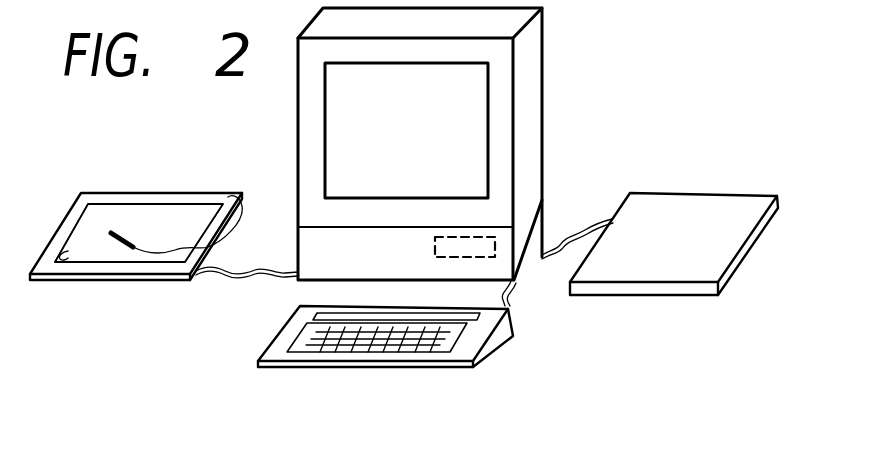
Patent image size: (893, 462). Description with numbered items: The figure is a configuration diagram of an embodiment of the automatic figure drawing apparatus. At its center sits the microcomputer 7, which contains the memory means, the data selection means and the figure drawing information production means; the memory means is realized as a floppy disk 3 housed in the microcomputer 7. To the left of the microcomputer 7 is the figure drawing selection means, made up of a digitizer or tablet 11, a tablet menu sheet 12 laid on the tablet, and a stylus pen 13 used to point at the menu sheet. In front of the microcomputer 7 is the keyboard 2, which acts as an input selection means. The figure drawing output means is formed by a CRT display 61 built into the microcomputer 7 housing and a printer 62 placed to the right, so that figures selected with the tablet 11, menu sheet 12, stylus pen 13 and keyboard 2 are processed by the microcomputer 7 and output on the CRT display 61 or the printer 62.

The keyboard 2 is at (463, 347).
The floppy disk 3 is at (477, 236).
The microcomputer 7 is at (528, 237).
The digitizer (tablet) 11 is at (100, 193).
The tablet menu sheet 12 is at (183, 212).
The stylus pen 13 is at (122, 248).
The CRT display 61 is at (472, 89).
The printer 62 is at (722, 212).